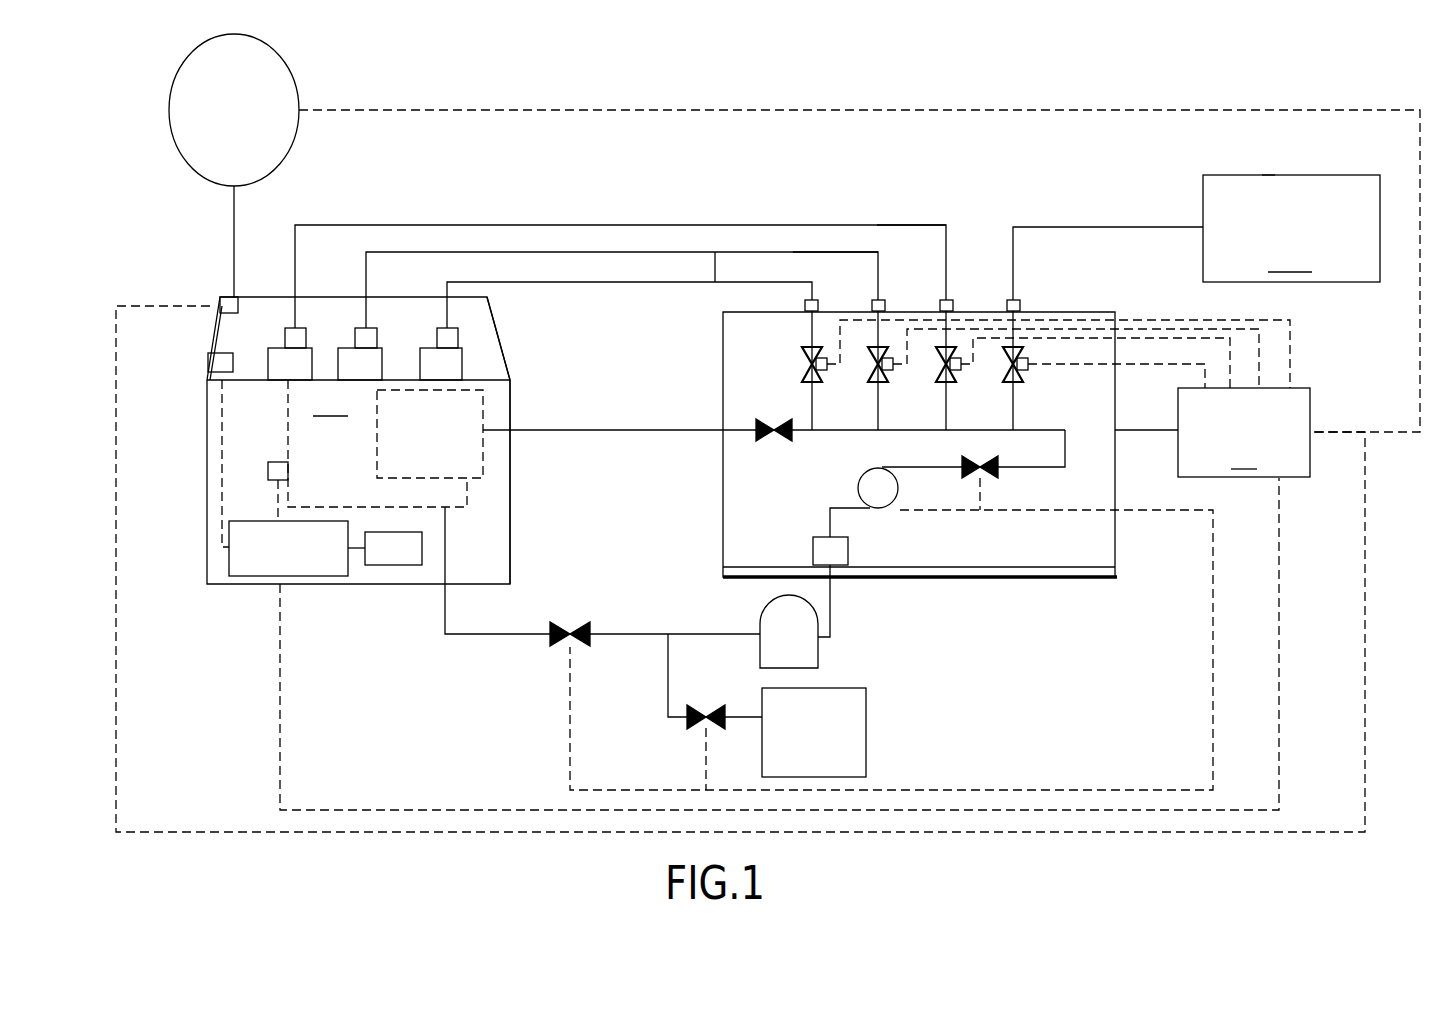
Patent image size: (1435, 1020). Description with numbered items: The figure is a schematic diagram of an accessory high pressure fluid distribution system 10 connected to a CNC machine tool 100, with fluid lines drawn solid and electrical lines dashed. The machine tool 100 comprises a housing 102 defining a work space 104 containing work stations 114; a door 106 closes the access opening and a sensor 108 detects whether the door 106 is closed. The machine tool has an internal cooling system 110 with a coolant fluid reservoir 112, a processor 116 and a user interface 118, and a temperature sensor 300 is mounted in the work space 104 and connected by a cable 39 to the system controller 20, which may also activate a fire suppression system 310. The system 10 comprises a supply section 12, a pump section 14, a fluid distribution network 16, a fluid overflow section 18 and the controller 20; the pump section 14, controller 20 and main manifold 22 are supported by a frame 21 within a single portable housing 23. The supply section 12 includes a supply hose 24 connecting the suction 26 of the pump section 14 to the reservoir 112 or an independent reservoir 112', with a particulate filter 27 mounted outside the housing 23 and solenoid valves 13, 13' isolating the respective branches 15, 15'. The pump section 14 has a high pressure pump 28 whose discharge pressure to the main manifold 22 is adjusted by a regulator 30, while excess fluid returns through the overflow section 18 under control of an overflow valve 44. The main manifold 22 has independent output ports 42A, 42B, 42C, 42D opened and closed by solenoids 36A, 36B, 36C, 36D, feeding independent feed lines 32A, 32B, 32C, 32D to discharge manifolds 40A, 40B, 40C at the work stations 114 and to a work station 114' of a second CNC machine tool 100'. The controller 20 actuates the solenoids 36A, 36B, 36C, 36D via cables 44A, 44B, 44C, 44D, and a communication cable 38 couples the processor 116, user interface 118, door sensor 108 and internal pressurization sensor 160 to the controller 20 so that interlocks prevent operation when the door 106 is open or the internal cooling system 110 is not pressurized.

The accessory high pressure fluid distribution system 10 is at (903, 595).
The supply section 12 is at (600, 637).
The solenoid valve 13 is at (583, 616).
The solenoid valve 13' is at (724, 702).
The pump section 14 is at (858, 490).
The branch 15 is at (497, 570).
The branch 15' is at (647, 681).
The fluid distribution network 16 is at (550, 180).
The fluid overflow section 18 is at (560, 430).
The controller 20 is at (940, 589).
The frame 21 is at (1313, 420).
The main manifold 22 is at (1025, 430).
The portable housing 23 is at (1052, 570).
The supply hose 24 is at (735, 640).
The suction 26 is at (848, 555).
The particulate filter 27 is at (765, 612).
The high pressure pump 28 is at (900, 493).
The regulator 30 is at (997, 478).
The feed line 32A is at (715, 252).
The feed line 32B is at (793, 252).
The feed line 32C is at (877, 225).
The feed line 32D is at (1080, 227).
The solenoid 36A is at (808, 360).
The solenoid 36B is at (872, 360).
The solenoid 36C is at (940, 360).
The solenoid 36D is at (1007, 360).
The communication cable 38 is at (280, 742).
The cable 39 is at (165, 833).
The discharge manifold 40A is at (460, 338).
The discharge manifold 40B is at (352, 338).
The discharge manifold 40C is at (284, 335).
The output port 42A is at (818, 302).
The output port 42B is at (886, 302).
The output port 42C is at (953, 302).
The output port 42D is at (1020, 302).
The overflow valve 44 is at (762, 442).
The cable 44A is at (1290, 336).
The cable 44B is at (1259, 358).
The cable 44C is at (1230, 372).
The cable 44D is at (1157, 367).
The CNC machine tool 100 is at (320, 440).
The CNC machine tool 100' is at (1291, 228).
The housing 102 is at (512, 485).
The work space 104 is at (490, 365).
The door 106 is at (208, 332).
The sensor 108 is at (218, 360).
The internal cooling system 110 is at (467, 487).
The coolant fluid reservoir 112 is at (352, 463).
The independent reservoir 112' is at (858, 731).
The work station 114 is at (326, 363).
The work station 114' is at (1303, 155).
The processor 116 is at (229, 560).
The user interface 118 is at (400, 565).
The pressurization sensor 160 is at (290, 470).
The temperature sensor 300 is at (232, 297).
The fire suppression system 310 is at (291, 163).